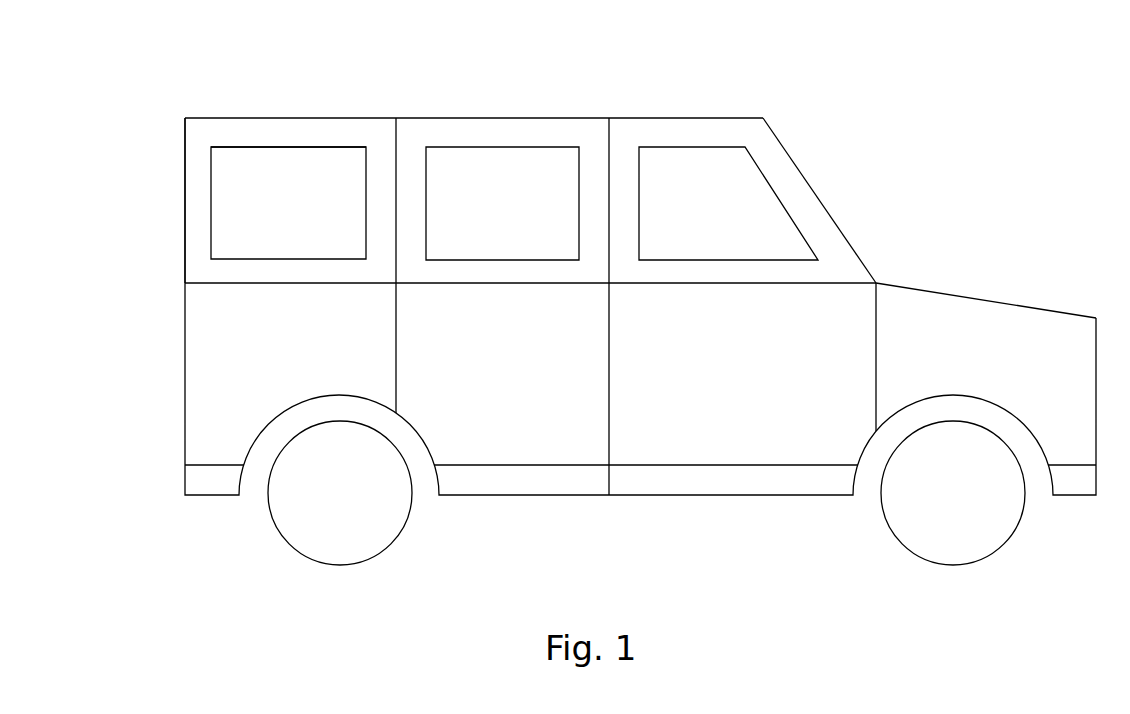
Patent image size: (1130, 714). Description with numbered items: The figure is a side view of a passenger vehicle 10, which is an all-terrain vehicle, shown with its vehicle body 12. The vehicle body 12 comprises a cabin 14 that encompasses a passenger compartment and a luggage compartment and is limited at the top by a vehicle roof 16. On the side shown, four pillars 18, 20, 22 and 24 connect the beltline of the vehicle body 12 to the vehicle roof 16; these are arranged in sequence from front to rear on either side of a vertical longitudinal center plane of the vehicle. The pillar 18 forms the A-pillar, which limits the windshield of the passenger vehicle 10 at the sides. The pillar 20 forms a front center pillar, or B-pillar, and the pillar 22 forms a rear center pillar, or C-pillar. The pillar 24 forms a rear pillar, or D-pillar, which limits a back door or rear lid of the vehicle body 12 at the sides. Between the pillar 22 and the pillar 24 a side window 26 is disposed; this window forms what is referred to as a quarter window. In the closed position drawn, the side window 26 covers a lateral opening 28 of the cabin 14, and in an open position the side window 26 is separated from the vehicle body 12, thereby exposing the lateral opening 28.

The passenger vehicle 10 is at (997, 165).
The vehicle body 12 is at (993, 300).
The cabin 14 is at (820, 202).
The vehicle roof 16 is at (435, 118).
The pillar 18 is at (768, 157).
The pillar 20 is at (627, 180).
The pillar 22 is at (403, 180).
The pillar 24 is at (185, 213).
The side window 26 is at (272, 157).
The lateral opening 28 is at (288, 147).